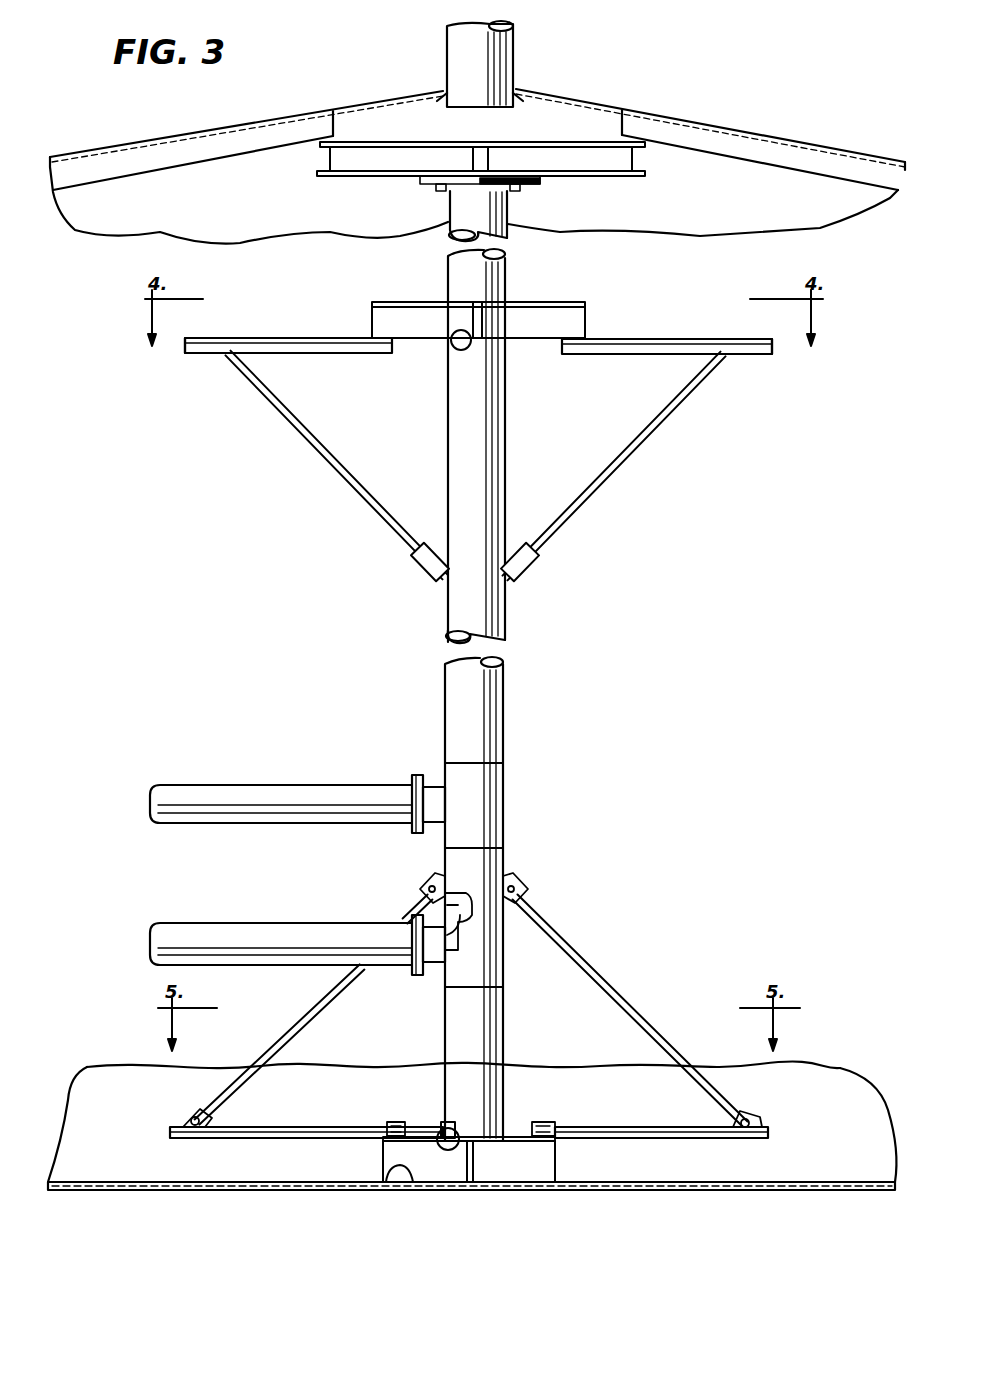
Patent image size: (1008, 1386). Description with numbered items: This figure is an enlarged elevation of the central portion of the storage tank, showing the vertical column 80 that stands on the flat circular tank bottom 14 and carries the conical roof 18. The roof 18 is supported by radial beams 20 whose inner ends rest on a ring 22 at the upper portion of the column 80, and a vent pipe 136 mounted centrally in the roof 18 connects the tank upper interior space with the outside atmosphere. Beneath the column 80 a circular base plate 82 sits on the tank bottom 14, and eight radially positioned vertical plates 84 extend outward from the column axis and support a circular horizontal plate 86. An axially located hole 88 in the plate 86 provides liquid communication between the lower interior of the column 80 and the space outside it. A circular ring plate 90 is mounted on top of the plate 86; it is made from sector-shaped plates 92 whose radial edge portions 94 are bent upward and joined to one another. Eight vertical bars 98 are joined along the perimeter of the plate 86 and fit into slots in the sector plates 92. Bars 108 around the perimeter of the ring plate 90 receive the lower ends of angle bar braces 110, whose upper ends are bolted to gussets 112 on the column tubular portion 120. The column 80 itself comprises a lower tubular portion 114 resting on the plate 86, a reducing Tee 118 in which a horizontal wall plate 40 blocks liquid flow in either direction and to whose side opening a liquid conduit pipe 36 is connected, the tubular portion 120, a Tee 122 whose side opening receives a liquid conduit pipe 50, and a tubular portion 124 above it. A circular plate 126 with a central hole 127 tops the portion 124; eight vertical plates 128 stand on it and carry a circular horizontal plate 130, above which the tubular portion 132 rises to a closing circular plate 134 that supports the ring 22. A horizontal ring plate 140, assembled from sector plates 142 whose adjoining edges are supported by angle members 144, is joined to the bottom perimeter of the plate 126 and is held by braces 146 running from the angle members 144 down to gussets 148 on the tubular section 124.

The tank bottom 14 is at (708, 1191).
The conical roof 18 is at (477, 133).
The radial beams 20 is at (180, 158).
The ring 22 is at (345, 179).
The liquid conduit pipe 36 is at (212, 942).
The horizontal circular wall plate 40 is at (455, 920).
The liquid conduit pipe 50 is at (210, 795).
The vertical column 80 is at (512, 704).
The circular base plate 82 is at (462, 1187).
The radial vertical plates 84 is at (395, 1150).
The circular horizontal plate 86 is at (513, 1135).
The circular axially located hole 88 is at (452, 1130).
The circular ring plate 90 is at (469, 1133).
The circular sector plates 92 is at (225, 1138).
The radial edge portions 94 is at (284, 1128).
The vertical bars 98 is at (395, 1122).
The bars 108 is at (187, 1120).
The angle bar brace 110 is at (302, 1016).
The gussets 112 is at (425, 878).
The lower tubular portion 114 is at (456, 1022).
The reducing Tee 118 is at (500, 965).
The column tubular portion 120 is at (455, 857).
The Tee 122 is at (492, 816).
The column tubular portion 124 is at (463, 420).
The circular plate 126 is at (534, 340).
The circular hole 127 is at (452, 350).
The vertical plates 128 is at (372, 322).
The circular horizontal plate 130 is at (481, 326).
The column tubular portion 132 is at (450, 270).
The circular plate 134 is at (455, 198).
The vent pipe 136 is at (447, 42).
The horizontal ring plate 140 is at (477, 438).
The sector plates 142 is at (278, 340).
The angle member 144 is at (200, 353).
The braces 146 is at (332, 458).
The gusset 148 is at (430, 560).